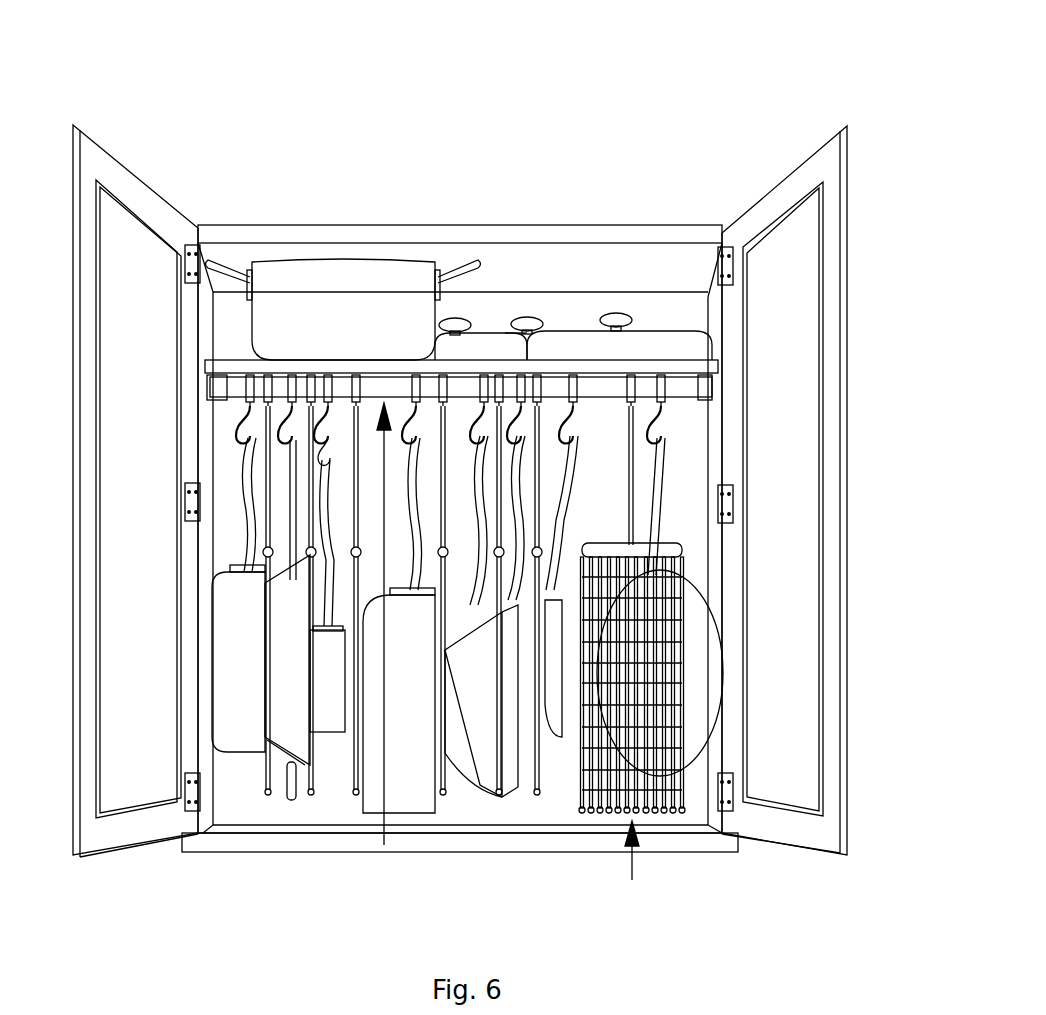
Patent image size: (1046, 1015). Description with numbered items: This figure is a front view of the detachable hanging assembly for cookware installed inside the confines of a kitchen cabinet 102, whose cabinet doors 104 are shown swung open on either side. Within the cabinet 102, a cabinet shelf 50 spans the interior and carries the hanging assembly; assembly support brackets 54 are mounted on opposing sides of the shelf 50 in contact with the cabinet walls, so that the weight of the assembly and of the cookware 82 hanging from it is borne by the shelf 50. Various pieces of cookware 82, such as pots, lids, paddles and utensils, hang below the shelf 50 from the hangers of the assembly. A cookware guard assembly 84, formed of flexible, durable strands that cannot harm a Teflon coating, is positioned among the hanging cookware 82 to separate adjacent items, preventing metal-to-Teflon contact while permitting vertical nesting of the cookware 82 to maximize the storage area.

The cabinet shelf 50 is at (233, 367).
The assembly support bracket 54 is at (384, 845).
The cookware 82 is at (342, 300).
The cookware guard assembly 84 is at (632, 880).
The cabinet 102 is at (665, 232).
The cabinet door 104 is at (778, 276).